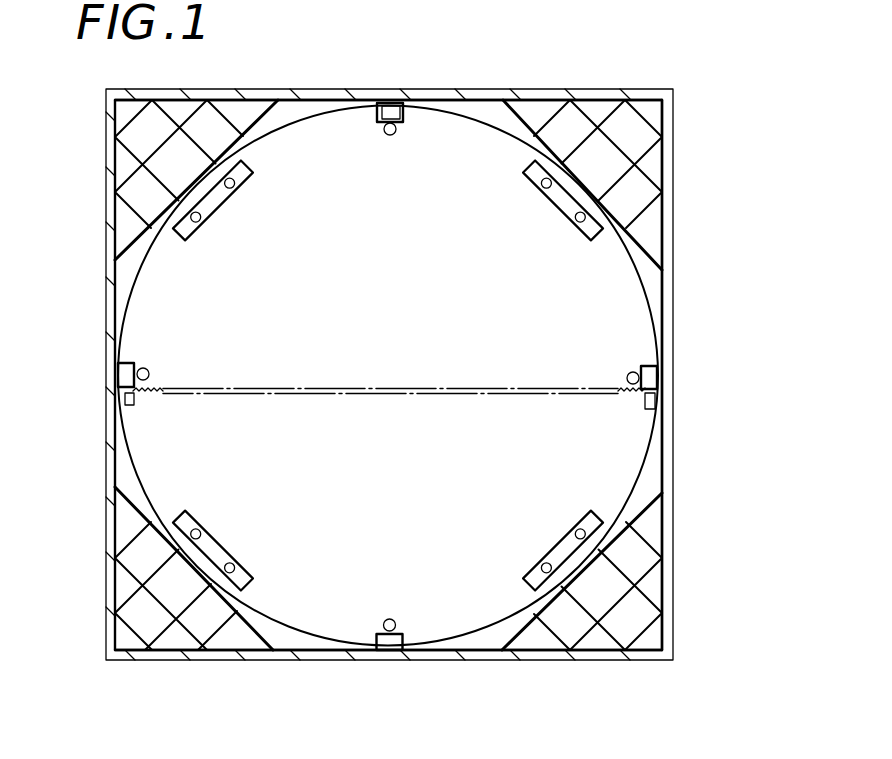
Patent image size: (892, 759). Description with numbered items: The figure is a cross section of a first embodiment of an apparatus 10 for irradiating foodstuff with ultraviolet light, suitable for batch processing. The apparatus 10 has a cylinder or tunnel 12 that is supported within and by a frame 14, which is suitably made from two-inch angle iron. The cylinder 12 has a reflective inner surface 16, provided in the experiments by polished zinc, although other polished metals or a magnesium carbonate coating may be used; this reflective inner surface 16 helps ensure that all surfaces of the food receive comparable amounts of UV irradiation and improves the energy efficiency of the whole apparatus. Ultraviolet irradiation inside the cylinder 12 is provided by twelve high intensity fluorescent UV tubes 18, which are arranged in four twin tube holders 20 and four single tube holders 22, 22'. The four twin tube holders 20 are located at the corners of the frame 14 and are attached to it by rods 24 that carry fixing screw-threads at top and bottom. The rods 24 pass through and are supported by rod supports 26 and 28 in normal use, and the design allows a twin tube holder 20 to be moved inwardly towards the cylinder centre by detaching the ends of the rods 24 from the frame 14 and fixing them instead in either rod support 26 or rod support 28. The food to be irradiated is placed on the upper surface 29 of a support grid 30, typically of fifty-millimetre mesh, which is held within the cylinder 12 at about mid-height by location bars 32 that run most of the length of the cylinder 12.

The apparatus 10 is at (98, 230).
The cylinder or tunnel 12 is at (640, 287).
The frame 14 is at (274, 100).
The reflective inner surface 16 is at (313, 648).
The high intensity fluorescent UV tubes 18 is at (236, 182).
The twin tube holders 20 is at (231, 197).
The single tube holders 22 is at (431, 351).
The single tube holders 22' is at (415, 340).
The rods 24 is at (652, 147).
The rod support 26 is at (656, 198).
The rod support 28 is at (649, 260).
The upper surface 29 is at (160, 388).
The support grid 30 is at (358, 388).
The location bars 32 is at (135, 398).